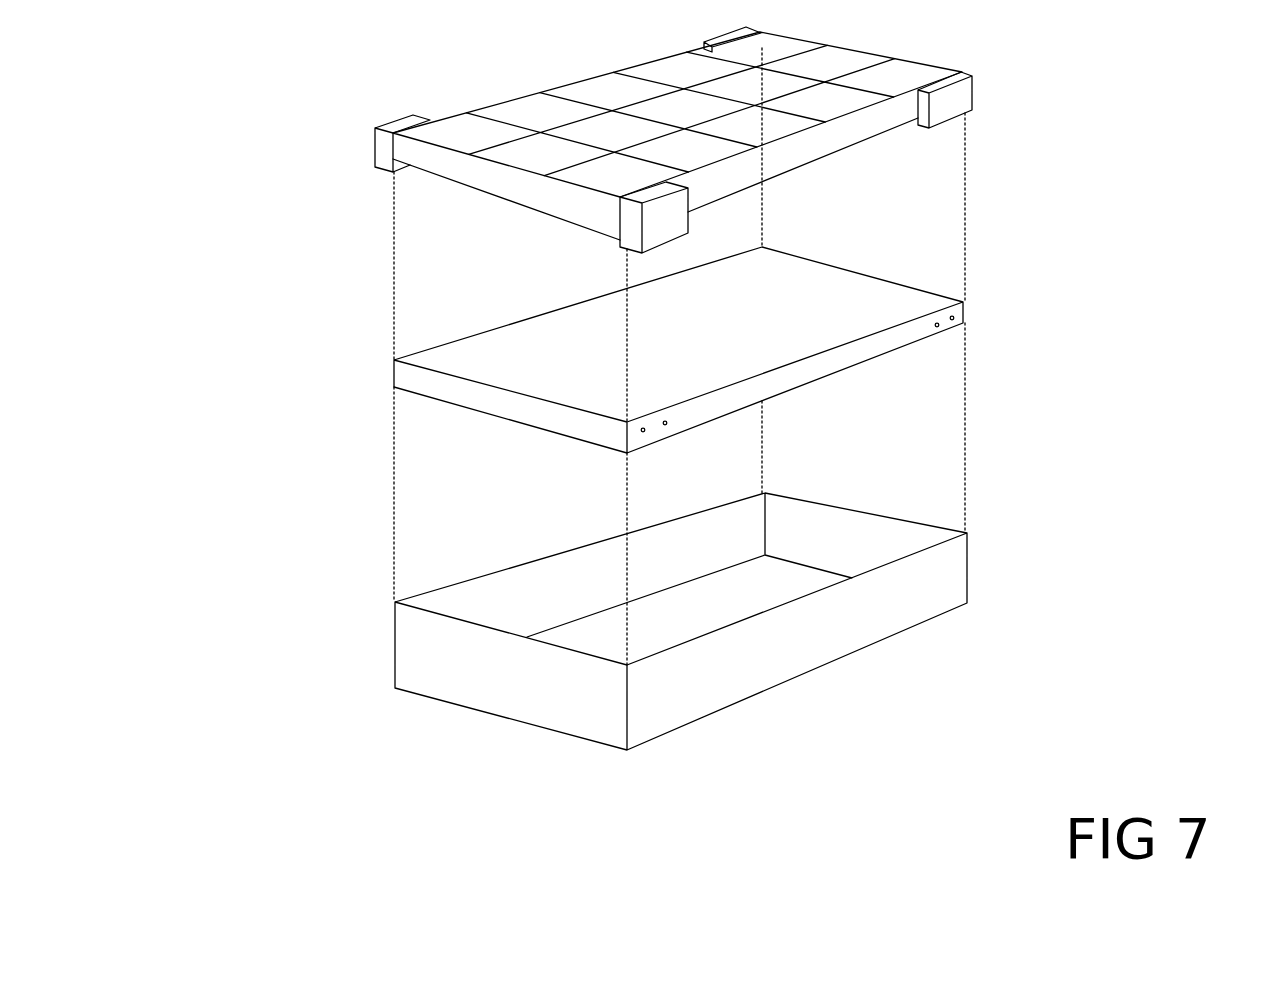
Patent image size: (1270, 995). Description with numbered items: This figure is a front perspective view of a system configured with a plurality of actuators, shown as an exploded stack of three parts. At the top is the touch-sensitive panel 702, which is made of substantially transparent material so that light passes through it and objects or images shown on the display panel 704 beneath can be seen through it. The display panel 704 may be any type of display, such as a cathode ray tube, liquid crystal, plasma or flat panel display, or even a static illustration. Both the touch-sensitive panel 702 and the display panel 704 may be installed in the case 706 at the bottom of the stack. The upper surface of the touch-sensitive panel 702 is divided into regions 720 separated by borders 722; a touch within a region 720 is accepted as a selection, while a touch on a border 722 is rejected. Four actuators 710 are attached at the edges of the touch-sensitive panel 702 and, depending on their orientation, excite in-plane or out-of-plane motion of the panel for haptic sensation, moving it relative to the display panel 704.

The touch-sensitive panel 702 is at (403, 147).
The display panel 704 is at (458, 397).
The case 706 is at (423, 654).
The actuators 710 is at (712, 28).
The regions 720 is at (631, 137).
The borders 722 is at (540, 120).